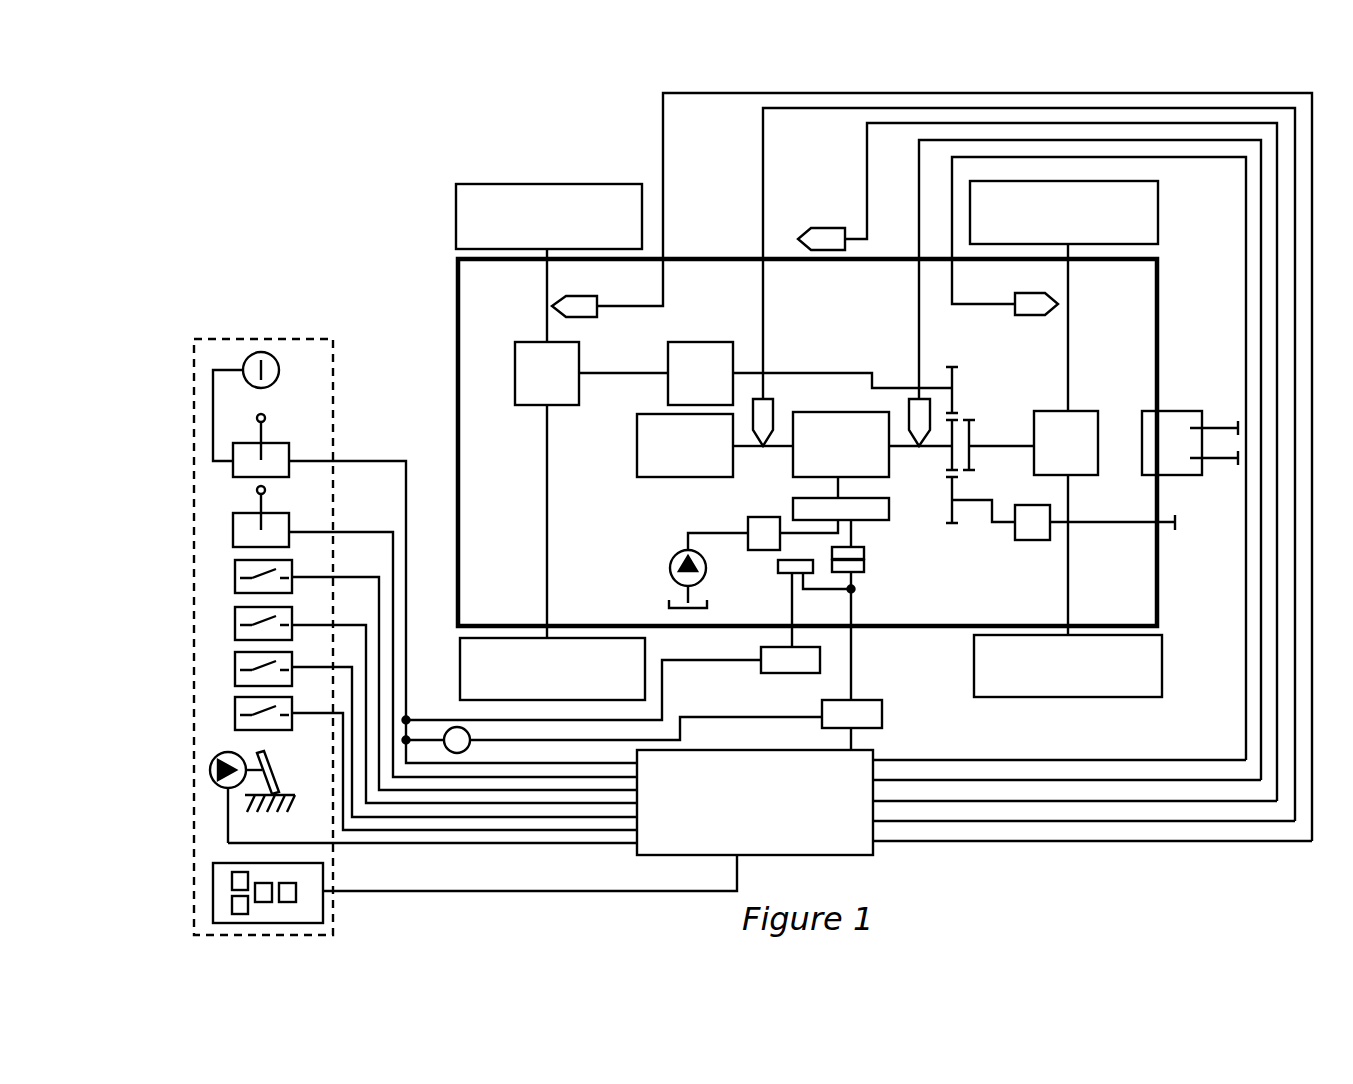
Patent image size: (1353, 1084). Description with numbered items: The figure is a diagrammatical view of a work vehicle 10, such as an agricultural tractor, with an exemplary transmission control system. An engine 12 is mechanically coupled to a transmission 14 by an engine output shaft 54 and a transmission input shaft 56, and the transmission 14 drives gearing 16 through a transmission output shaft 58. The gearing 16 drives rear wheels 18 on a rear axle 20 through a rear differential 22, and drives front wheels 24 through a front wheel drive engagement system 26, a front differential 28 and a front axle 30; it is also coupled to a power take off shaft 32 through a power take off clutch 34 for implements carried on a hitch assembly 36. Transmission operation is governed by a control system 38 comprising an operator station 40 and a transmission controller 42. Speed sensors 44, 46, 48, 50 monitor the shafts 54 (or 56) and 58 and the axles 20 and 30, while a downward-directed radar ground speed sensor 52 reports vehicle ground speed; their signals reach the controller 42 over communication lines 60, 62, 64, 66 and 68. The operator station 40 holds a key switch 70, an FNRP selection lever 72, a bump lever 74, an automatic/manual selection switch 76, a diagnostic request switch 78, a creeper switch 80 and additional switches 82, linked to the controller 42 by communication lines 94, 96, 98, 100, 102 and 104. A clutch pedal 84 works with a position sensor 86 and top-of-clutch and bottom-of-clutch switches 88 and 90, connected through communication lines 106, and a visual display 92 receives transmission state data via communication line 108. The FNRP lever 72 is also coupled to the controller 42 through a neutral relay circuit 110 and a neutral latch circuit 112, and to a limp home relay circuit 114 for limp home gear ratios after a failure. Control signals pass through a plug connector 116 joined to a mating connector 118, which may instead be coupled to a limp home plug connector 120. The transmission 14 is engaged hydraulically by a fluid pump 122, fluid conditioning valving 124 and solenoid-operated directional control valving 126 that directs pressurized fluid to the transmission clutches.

The vehicle 10 is at (425, 290).
The engine 12 is at (655, 477).
The transmission 14 is at (889, 470).
The gearing 16 is at (971, 401).
The rear wheels 18 is at (1158, 212).
The rear axle 20 is at (1068, 330).
The rear differential 22 is at (1090, 411).
The front wheels 24 is at (578, 184).
The front wheel drive engagement system 26 is at (718, 342).
The front differential 28 is at (532, 342).
The front axle 30 is at (547, 510).
The power take off shaft 32 is at (1103, 522).
The power take off clutch 34 is at (1030, 540).
The hitch assembly 36 is at (1192, 475).
The control system 38 is at (963, 871).
The operator station 40 is at (237, 339).
The transmission controller 42 is at (825, 852).
The speed sensor 44 is at (770, 399).
The speed sensor 46 is at (922, 399).
The speed sensor 48 is at (1025, 293).
The speed sensor 50 is at (583, 296).
The ground speed sensor 52 is at (835, 228).
The engine output shaft 54 is at (747, 450).
The transmission input shaft 56 is at (778, 450).
The transmission output shaft 58 is at (912, 447).
The data communication line 60 is at (935, 108).
The data communication line 62 is at (1067, 140).
The communication line 64 is at (1128, 157).
The communication line 66 is at (877, 93).
The communication line 68 is at (1005, 123).
The key switch 70 is at (240, 378).
The forward-neutral-reverse-park selection lever 72 is at (250, 467).
The bump lever 74 is at (248, 528).
The automatic/manual selection switch 76 is at (245, 585).
The diagnostic request switch 78 is at (245, 632).
The creeper switch 80 is at (245, 678).
The additional operator command switches 82 is at (245, 722).
The clutch pedal 84 is at (265, 752).
The position sensor 86 is at (229, 800).
The top-of-clutch switch 88 is at (210, 767).
The bottom-of-clutch switch 90 is at (212, 782).
The visual display 92 is at (222, 893).
The communication line 94 is at (348, 458).
The communication line 96 is at (348, 532).
The communication line 98 is at (338, 577).
The communication line 100 is at (338, 625).
The communication line 102 is at (338, 667).
The communication line 104 is at (403, 833).
The communication lines 106 is at (440, 845).
The communication line 108 is at (503, 890).
The neutral relay circuit 110 is at (465, 750).
The neutral latch circuit 112 is at (880, 705).
The limp home relay circuit 114 is at (780, 673).
The plug connector 116 is at (864, 566).
The mating connector 118 is at (864, 553).
The limp home plug connector 120 is at (778, 568).
The fluid pump 122 is at (672, 575).
The fluid conditioning valving 124 is at (748, 520).
The directional control valving 126 is at (889, 508).